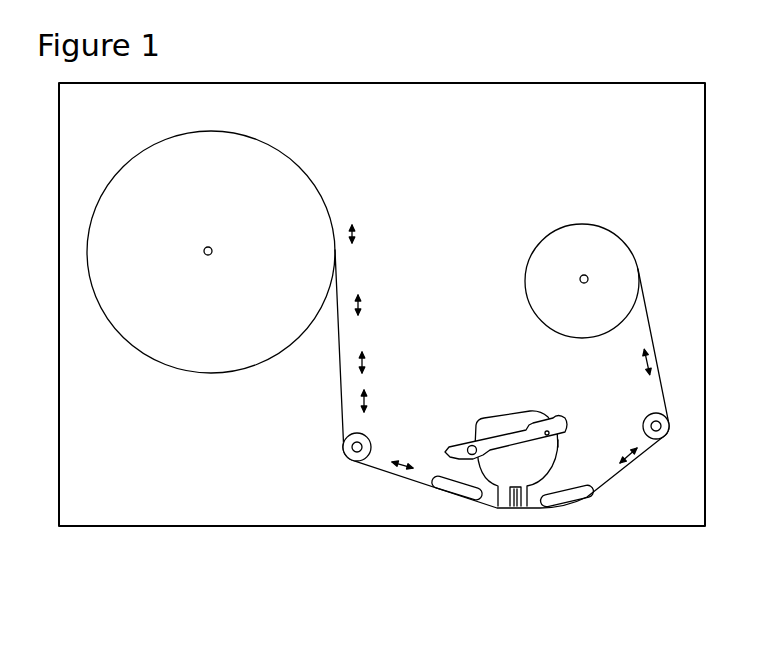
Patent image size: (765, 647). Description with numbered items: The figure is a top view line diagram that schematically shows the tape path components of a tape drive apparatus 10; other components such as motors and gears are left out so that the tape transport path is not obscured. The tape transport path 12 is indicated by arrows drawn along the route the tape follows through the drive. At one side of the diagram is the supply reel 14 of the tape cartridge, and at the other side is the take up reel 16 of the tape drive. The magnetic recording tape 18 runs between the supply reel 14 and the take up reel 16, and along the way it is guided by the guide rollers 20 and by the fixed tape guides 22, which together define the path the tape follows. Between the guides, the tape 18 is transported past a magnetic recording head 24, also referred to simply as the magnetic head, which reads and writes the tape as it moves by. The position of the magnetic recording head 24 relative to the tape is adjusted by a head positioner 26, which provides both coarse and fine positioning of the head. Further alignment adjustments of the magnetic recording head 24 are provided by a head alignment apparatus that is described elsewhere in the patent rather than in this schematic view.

The tape drive apparatus 10 is at (213, 553).
The tape transport path 12 is at (355, 232).
The supply reel 14 is at (142, 353).
The take up reel 16 is at (566, 226).
The magnetic recording tape 18 is at (340, 373).
The guide rollers 20 is at (372, 443).
The fixed tape guides 22 is at (444, 496).
The magnetic recording head 24 is at (510, 506).
The head positioner 26 is at (501, 417).